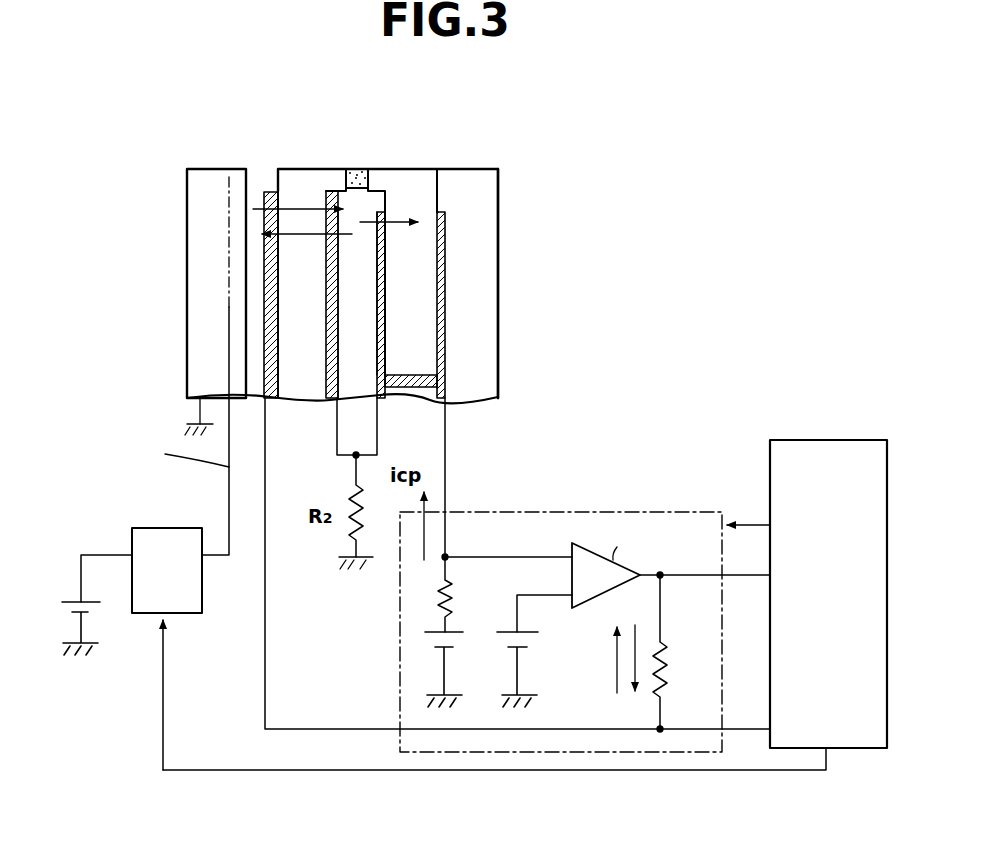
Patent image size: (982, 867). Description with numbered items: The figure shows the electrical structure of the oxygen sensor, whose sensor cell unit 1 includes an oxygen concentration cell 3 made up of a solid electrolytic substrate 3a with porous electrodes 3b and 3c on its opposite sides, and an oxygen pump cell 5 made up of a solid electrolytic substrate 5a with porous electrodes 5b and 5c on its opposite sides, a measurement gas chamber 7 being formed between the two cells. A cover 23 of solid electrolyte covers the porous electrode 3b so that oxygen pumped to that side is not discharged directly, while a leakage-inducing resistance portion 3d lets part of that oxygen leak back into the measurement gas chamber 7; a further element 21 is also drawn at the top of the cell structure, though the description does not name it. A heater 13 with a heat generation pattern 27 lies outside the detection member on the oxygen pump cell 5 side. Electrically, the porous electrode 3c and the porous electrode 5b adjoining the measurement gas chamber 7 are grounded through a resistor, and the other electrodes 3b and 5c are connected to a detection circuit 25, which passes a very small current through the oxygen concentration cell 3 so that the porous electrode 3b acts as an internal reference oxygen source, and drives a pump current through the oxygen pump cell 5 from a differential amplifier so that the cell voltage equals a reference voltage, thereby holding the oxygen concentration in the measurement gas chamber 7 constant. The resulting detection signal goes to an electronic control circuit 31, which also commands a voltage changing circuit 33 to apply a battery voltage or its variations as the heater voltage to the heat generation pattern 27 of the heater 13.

The sensor cell unit 1 is at (540, 232).
The oxygen concentration cell 3 is at (627, 257).
The solid electrolytic substrate 3a is at (413, 359).
The porous electrode 3b is at (440, 302).
The porous electrode 3c is at (384, 321).
The leakage-inducing resistance portion 3d is at (413, 388).
The oxygen pump cell 5 is at (112, 225).
The solid electrolytic substrate 5a is at (293, 327).
The porous electrode 5b is at (327, 263).
The porous electrode 5c is at (262, 288).
The measurement gas chamber 7 is at (352, 362).
The heater 13 is at (162, 193).
The diffusion limiting portion 21 is at (357, 168).
The cover 23 is at (473, 187).
The detection circuit 25 is at (397, 613).
The heat generation pattern 27 is at (228, 233).
The ECU 31 is at (836, 440).
The voltage changing circuit 33 is at (137, 525).